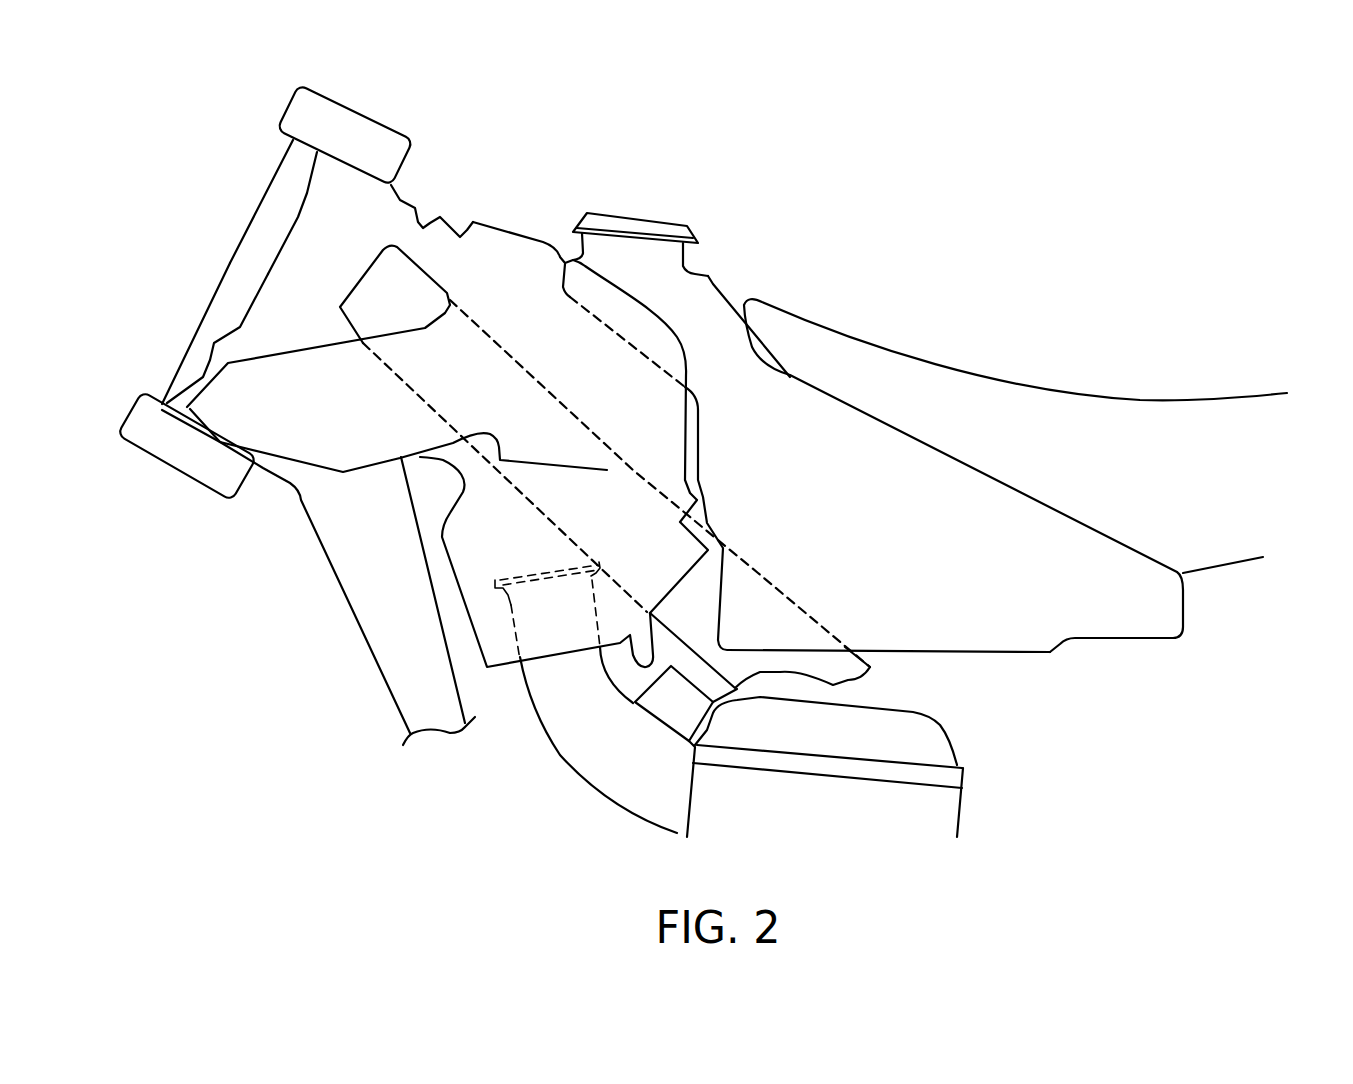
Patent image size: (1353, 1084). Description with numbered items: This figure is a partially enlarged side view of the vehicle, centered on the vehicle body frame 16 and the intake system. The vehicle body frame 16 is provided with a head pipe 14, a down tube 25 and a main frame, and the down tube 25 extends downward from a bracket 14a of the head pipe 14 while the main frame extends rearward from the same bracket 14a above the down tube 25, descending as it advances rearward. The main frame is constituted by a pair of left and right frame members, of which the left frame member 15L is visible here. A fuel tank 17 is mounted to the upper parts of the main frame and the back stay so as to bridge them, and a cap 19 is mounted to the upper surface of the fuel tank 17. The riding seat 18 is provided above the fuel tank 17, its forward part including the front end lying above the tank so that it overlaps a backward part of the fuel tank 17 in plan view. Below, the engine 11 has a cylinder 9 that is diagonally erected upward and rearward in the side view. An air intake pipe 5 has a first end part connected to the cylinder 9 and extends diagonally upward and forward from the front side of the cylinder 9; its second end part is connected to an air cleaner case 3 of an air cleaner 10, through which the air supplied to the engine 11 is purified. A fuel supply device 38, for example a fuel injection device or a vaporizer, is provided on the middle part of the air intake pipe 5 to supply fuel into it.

The air cleaner case 3 is at (502, 657).
The air intake pipe 5 is at (598, 772).
The cylinder 9 is at (950, 808).
The air cleaner 10 is at (526, 236).
The engine 11 is at (936, 724).
The head pipe 14 is at (233, 262).
The bracket 14a is at (320, 187).
The left frame member 15L is at (407, 272).
The vehicle body frame 16 is at (466, 138).
The fuel tank 17 is at (702, 288).
The riding seat 18 is at (952, 368).
The cap 19 is at (657, 221).
The down tube 25 is at (368, 605).
The fuel supply device 38 is at (665, 710).